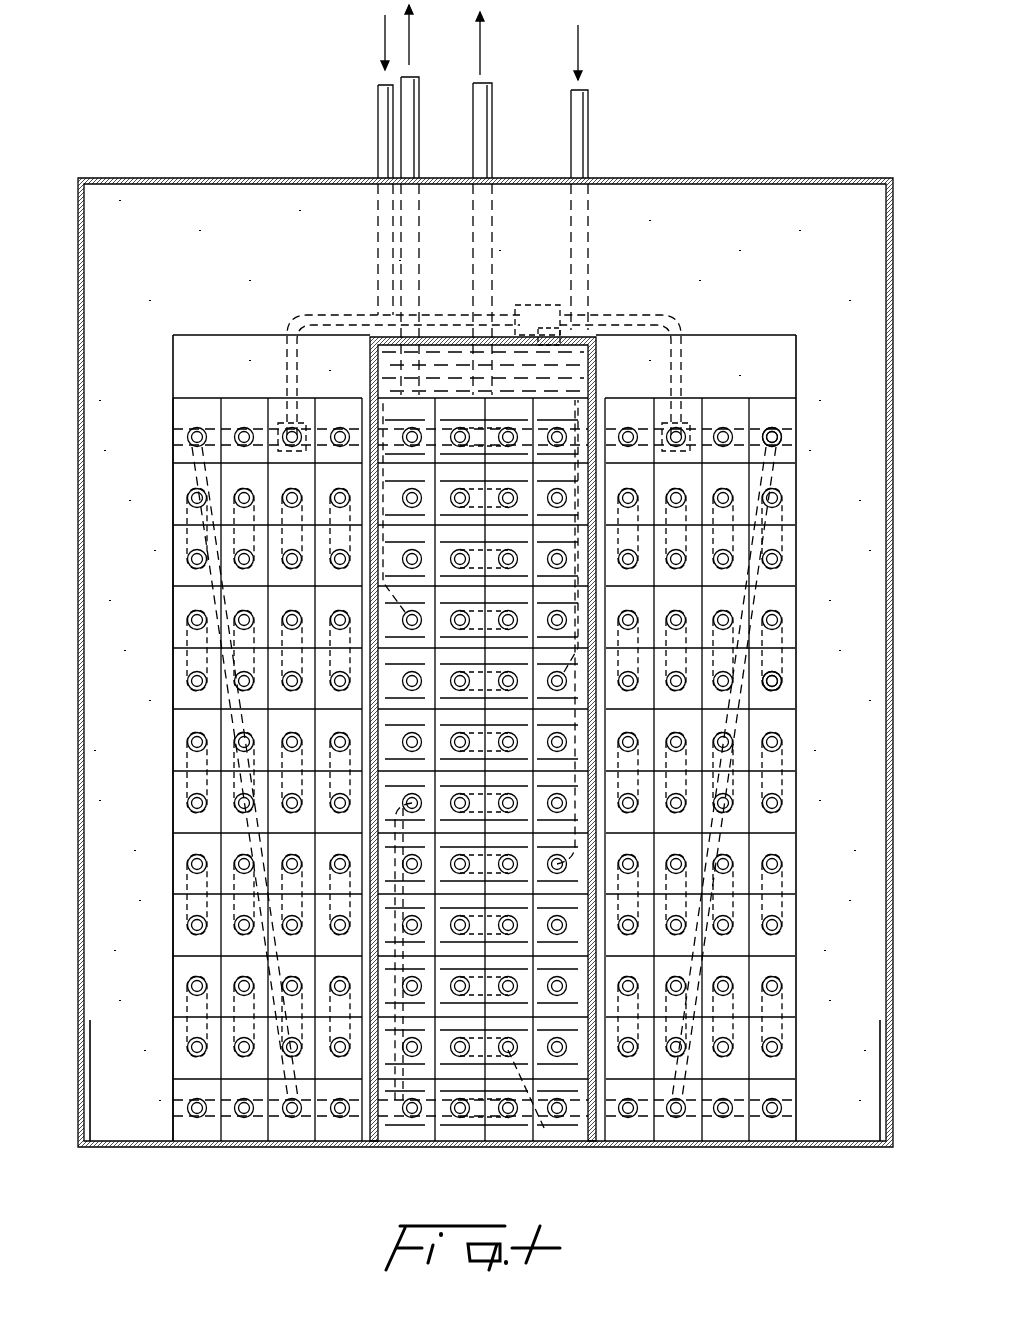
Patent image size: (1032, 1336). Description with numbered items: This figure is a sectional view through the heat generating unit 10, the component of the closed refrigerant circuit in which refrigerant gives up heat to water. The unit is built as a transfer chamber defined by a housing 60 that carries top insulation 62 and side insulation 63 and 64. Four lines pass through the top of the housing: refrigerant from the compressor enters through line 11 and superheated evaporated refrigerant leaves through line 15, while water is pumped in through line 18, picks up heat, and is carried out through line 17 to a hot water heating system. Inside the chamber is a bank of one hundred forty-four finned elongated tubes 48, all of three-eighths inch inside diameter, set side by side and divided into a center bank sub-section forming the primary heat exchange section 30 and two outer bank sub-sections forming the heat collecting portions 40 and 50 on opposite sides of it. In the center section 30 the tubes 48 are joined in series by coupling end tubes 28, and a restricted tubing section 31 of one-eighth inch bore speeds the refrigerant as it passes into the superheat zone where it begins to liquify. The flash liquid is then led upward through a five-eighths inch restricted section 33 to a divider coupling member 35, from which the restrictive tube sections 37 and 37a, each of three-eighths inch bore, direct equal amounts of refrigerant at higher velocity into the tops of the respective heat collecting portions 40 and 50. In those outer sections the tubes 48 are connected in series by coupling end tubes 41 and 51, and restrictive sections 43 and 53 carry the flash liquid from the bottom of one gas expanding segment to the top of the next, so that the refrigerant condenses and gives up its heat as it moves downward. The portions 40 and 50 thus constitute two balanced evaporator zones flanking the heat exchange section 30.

The heat generating unit 10 is at (698, 112).
The line 11 is at (585, 120).
The line 15 is at (488, 115).
The line 17 is at (405, 145).
The line 18 is at (378, 103).
The coupling end tubes 28 is at (545, 1130).
The heat exchange section 30 is at (465, 1125).
The restricted tubing section 31 is at (372, 1090).
The restricted section 33 is at (555, 345).
The divider coupling member 35 is at (545, 320).
The restrictive tube section 37 is at (300, 318).
The restrictive tube section 37a is at (640, 318).
The heat collecting portion 40 is at (248, 1130).
The coupling end tubes 41 is at (190, 658).
The restrictive section 43 is at (210, 593).
The elongated tubes 48 is at (780, 430).
The heat collecting portion 50 is at (686, 1128).
The coupling end tubes 51 is at (778, 670).
The restrictive section 53 is at (760, 574).
The housing 60 is at (78, 458).
The top insulation 62 is at (760, 208).
The side insulation 63 is at (100, 807).
The side insulation 64 is at (857, 455).